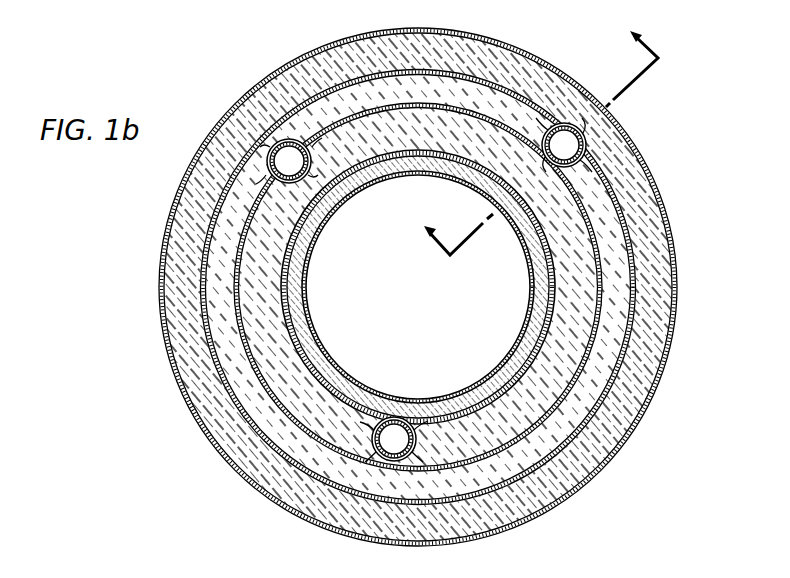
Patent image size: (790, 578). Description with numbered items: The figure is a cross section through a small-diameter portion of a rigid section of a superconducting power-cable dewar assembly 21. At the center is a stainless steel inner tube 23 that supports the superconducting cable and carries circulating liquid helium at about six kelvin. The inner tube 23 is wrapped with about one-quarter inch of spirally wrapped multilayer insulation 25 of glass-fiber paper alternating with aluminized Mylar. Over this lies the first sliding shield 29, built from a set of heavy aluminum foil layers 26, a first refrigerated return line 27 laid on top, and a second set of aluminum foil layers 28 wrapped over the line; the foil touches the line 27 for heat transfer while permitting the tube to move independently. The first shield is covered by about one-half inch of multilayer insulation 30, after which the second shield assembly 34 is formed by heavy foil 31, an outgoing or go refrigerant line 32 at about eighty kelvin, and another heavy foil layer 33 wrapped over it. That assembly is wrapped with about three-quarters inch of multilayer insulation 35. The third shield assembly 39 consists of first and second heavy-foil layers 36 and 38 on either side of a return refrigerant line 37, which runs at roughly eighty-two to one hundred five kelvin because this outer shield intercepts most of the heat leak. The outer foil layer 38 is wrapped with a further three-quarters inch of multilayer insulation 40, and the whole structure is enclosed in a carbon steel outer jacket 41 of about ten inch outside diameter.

The tubular assembly 21 is at (134, 397).
The inner tube 23 is at (310, 326).
The multilayer insulation 25 is at (400, 410).
The aluminum foil 26 is at (427, 400).
The first refrigerated line 27 is at (385, 412).
The second set of aluminum foil layers 28 is at (370, 437).
The first shield 29 is at (290, 293).
The multilayer insulation 30 is at (364, 186).
The heavy foil 31 is at (328, 196).
The go refrigerant line 32 is at (282, 184).
The heavy foil layer 33 is at (312, 153).
The second shield assembly 34 is at (240, 243).
The multilayer insulation 35 is at (232, 225).
The first heavy-foil layer 36 is at (612, 120).
The return refrigerant line 37 is at (584, 118).
The second heavy-foil layer 38 is at (572, 93).
The third shield assembly 39 is at (608, 183).
The multilayer insulation 40 is at (640, 242).
The outer jacket 41 is at (677, 288).